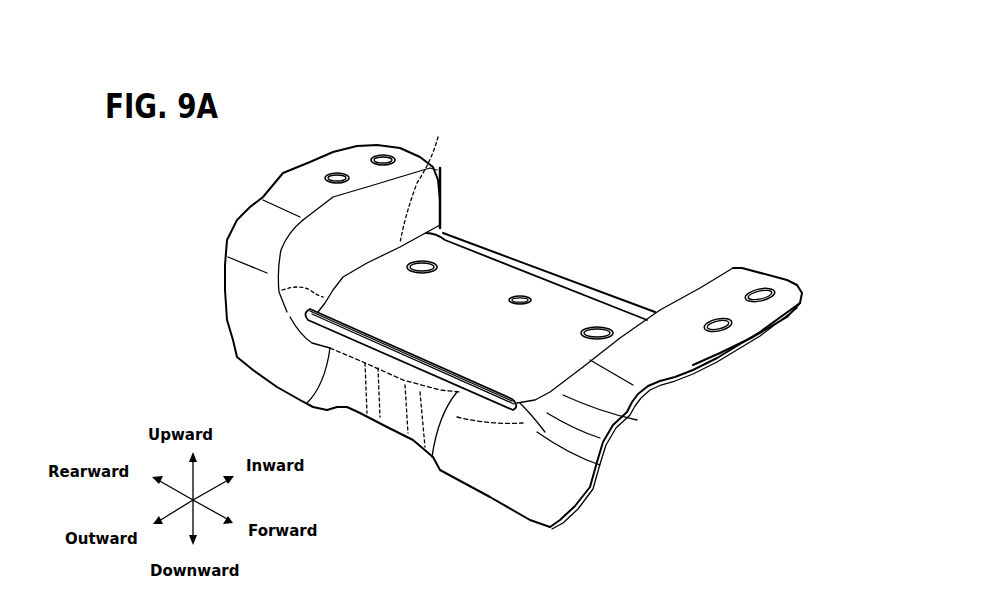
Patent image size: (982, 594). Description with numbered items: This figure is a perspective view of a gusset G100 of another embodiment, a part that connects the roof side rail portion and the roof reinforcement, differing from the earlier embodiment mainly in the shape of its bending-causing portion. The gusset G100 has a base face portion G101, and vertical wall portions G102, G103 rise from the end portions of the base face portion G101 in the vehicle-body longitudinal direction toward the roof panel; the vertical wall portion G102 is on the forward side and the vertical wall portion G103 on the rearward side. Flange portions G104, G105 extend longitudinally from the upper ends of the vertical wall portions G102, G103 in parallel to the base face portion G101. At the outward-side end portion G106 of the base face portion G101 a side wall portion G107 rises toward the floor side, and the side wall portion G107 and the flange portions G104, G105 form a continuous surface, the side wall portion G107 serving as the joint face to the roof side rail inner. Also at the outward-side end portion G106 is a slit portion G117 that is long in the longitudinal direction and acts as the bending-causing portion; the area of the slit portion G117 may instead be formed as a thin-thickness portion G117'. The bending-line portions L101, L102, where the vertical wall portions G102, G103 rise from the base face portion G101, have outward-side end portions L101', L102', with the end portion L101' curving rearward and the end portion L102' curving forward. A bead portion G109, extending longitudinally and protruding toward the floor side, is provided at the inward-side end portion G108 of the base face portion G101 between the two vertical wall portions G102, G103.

The gusset G100 is at (711, 222).
The base face portion G101 is at (505, 290).
The vertical wall portion G102 is at (700, 290).
The vertical wall portion G103 is at (430, 190).
The flange portion G104 is at (678, 362).
The flange portion G105 is at (355, 158).
The outward-side end portion G106 is at (430, 460).
The side wall portion G107 is at (495, 478).
The inward-side end portion G108 is at (481, 246).
The bead portion G109 is at (593, 297).
The slit portion G117 is at (374, 366).
The thin-thickness portion G117' is at (367, 379).
The bending-line portion L101 is at (624, 421).
The outward-side end portion L101' is at (604, 459).
The bending-line portion L102 is at (432, 179).
The outward-side end portion L102' is at (235, 303).